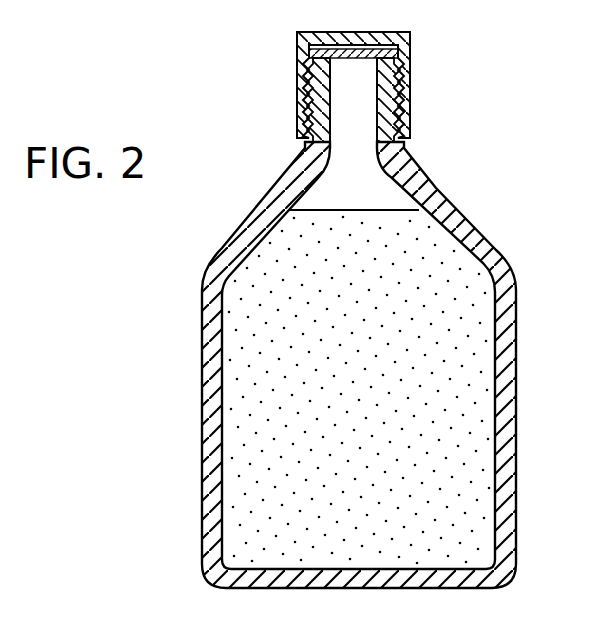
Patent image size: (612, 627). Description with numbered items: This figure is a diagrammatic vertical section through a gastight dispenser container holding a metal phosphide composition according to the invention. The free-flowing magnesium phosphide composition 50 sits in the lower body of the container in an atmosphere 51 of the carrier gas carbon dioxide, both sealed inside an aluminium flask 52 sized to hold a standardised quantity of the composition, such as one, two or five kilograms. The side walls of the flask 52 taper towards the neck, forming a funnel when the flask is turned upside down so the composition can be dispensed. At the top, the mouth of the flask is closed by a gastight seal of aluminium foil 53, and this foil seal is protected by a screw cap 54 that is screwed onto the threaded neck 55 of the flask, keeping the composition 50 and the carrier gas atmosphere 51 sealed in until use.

The metal phosphide composition 50 is at (440, 462).
The atmosphere of carrier gas CO2 51 is at (362, 180).
The aluminium flask 52 is at (500, 373).
The gastight seal of aluminium foil 53 is at (398, 34).
The screw cap 54 is at (404, 63).
The threaded neck 55 is at (398, 100).